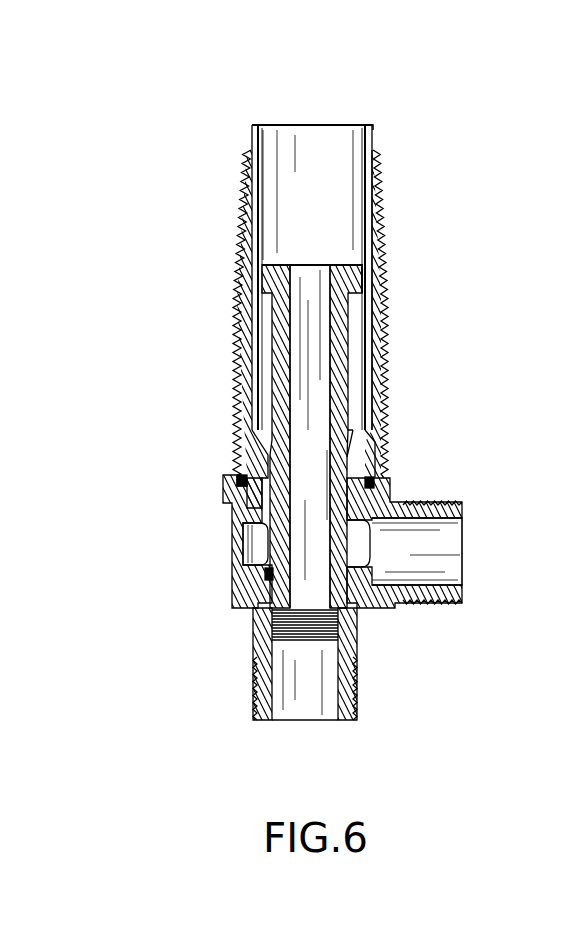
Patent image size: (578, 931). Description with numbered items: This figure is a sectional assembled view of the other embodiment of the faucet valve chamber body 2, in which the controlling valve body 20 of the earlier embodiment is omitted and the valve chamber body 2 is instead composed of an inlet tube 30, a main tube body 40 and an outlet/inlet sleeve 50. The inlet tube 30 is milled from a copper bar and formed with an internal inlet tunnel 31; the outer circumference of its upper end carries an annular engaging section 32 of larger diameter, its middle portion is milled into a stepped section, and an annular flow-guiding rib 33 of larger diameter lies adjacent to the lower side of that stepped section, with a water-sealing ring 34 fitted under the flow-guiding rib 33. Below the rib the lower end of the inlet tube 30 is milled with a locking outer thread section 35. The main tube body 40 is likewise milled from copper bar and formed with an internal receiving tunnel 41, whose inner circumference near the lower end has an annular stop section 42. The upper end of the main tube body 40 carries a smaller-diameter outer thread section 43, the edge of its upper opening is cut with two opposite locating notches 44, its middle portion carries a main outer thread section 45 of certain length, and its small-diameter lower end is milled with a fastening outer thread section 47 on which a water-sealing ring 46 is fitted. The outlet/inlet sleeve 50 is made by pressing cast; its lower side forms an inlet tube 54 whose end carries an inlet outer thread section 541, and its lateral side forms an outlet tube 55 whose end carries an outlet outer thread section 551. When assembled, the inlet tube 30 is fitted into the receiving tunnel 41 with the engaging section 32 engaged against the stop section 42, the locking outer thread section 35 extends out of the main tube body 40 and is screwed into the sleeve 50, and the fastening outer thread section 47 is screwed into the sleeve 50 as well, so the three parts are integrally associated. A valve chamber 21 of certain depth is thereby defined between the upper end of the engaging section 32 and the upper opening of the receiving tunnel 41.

The valve chamber body 2 is at (236, 116).
The controlling valve body 20 is at (320, 215).
The valve chamber 21 is at (259, 372).
The inlet tube 30 is at (349, 388).
The inlet tunnel 31 is at (318, 338).
The engaging section 32 is at (262, 282).
The flow-guiding rib 33 is at (246, 548).
The water-sealing ring 34 is at (265, 585).
The locking outer thread section 35 is at (396, 614).
The main tube body 40 is at (390, 291).
The receiving tunnel 41 is at (246, 222).
The stop section 42 is at (372, 447).
The outer thread section 43 is at (245, 165).
The locating notches 44 is at (380, 137).
The main outer thread section 45 is at (352, 433).
The water-sealing ring 46 is at (375, 483).
The fastening outer thread section 47 is at (238, 481).
The outlet/inlet sleeve 50 is at (230, 602).
The inlet tube 54 is at (300, 697).
The outlet tube 55 is at (445, 535).
The inlet outer thread section 541 is at (250, 700).
The outlet outer thread section 551 is at (447, 503).